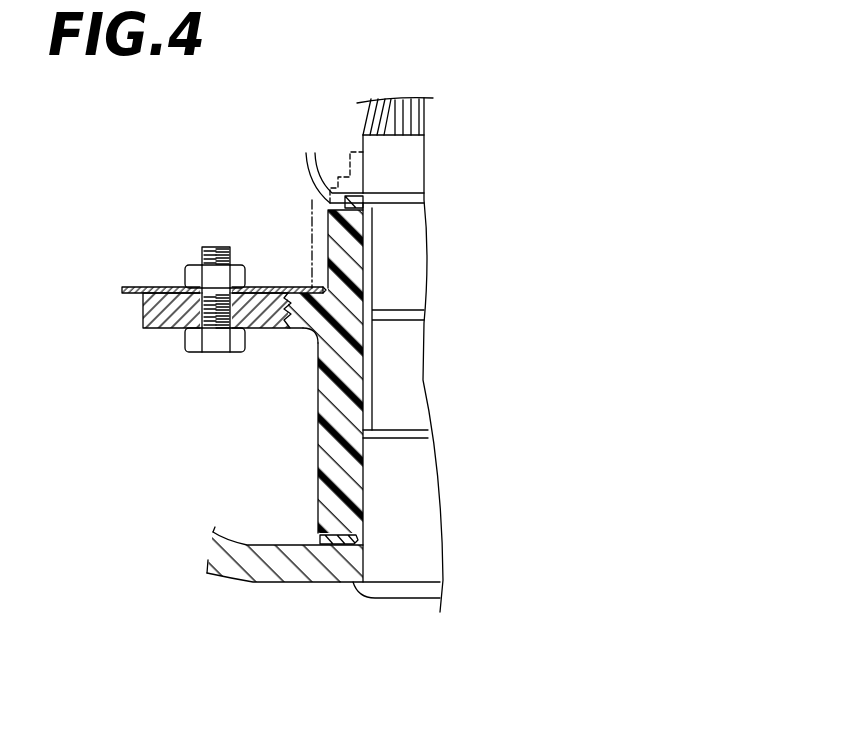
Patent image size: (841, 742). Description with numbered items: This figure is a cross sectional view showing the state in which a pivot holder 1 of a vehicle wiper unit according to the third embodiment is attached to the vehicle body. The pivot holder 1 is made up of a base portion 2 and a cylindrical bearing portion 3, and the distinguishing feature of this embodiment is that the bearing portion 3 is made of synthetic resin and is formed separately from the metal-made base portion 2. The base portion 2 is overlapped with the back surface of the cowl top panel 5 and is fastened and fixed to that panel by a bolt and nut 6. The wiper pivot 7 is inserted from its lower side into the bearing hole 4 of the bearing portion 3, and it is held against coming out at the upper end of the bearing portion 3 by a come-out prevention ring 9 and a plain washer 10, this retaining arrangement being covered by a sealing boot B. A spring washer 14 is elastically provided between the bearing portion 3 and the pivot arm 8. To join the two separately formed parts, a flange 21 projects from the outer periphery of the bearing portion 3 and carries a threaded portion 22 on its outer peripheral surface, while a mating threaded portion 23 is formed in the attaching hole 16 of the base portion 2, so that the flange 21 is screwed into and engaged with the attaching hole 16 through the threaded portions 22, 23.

The pivot holder 1 is at (313, 492).
The base portion 2 is at (143, 322).
The bearing portion 3 is at (318, 456).
The bearing hole 4 is at (372, 398).
The cowl top panel 5 is at (121, 302).
The bolt and nut 6 is at (185, 282).
The wiper pivot 7 is at (436, 185).
The pivot arm 8 is at (252, 584).
The come-out prevention ring 9 is at (307, 162).
The plain washer 10 is at (312, 182).
The spring washer 14 is at (325, 546).
The attaching hole 16 is at (292, 255).
The flange 21 is at (316, 343).
The threaded portion 22 is at (297, 324).
The threaded portion 23 is at (307, 285).
The sealing boot B is at (313, 203).